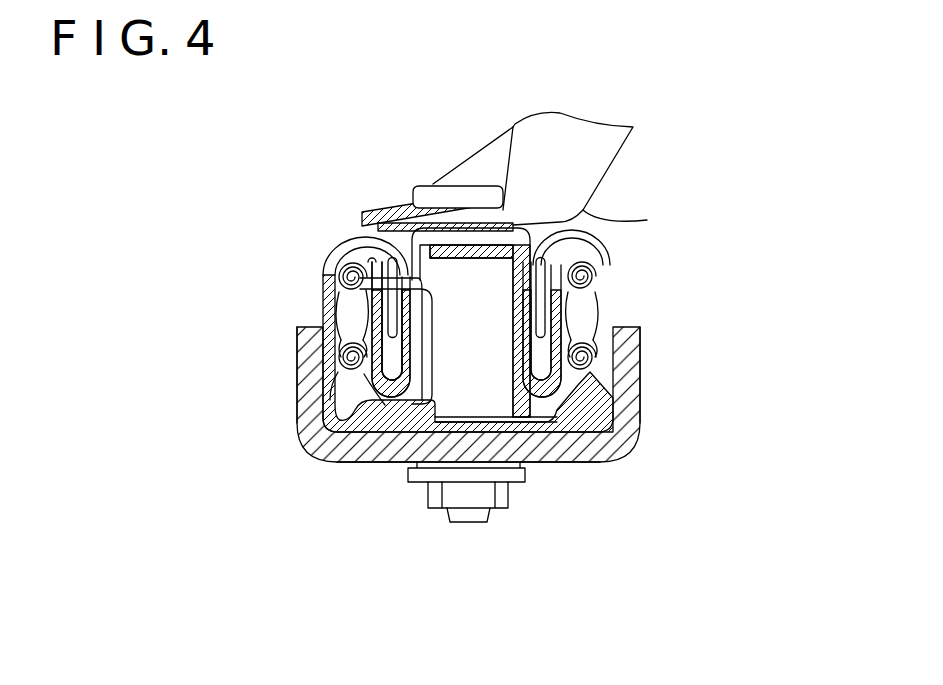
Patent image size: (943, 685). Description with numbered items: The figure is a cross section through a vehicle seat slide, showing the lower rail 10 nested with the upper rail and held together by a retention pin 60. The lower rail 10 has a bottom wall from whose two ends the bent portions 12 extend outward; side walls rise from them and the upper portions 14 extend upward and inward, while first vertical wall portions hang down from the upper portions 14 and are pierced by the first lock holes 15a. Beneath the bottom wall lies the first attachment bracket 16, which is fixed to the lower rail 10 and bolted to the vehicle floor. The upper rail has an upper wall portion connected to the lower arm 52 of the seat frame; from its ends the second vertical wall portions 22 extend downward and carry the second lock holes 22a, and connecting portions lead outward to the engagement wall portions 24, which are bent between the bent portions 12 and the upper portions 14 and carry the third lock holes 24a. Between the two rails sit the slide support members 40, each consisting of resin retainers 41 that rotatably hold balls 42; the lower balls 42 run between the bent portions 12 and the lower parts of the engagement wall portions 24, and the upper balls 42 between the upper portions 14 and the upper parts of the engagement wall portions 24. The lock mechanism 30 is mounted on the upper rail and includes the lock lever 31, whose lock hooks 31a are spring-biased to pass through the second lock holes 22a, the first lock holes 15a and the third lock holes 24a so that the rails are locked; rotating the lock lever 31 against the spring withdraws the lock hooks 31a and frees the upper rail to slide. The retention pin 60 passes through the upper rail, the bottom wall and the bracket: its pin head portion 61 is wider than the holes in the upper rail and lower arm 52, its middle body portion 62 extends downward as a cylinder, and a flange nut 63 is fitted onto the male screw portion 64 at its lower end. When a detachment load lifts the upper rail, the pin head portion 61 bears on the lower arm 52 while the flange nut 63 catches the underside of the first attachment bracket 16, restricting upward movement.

The lower rail 10 is at (622, 262).
The bent portions 12 is at (317, 457).
The upper portions 14 is at (600, 232).
The first lock holes 15a is at (340, 246).
The first attachment bracket 16 is at (573, 466).
The second vertical wall portions 22 is at (372, 398).
The second lock holes 22a is at (392, 250).
The engagement wall portions 24 is at (340, 363).
The third lock holes 24a is at (357, 245).
The lock mechanism 30 is at (317, 251).
The lock lever 31 is at (400, 423).
The lock hooks 31a is at (357, 282).
The slide support members 40 is at (331, 303).
The retainers 41 is at (333, 317).
The balls 42 is at (343, 250).
The lower arm 52 is at (483, 160).
The retention pin 60 is at (413, 162).
The pin head portion 61 is at (462, 185).
The middle body portion 62 is at (513, 392).
The flange nut 63 is at (430, 486).
The male screw portion 64 is at (468, 523).